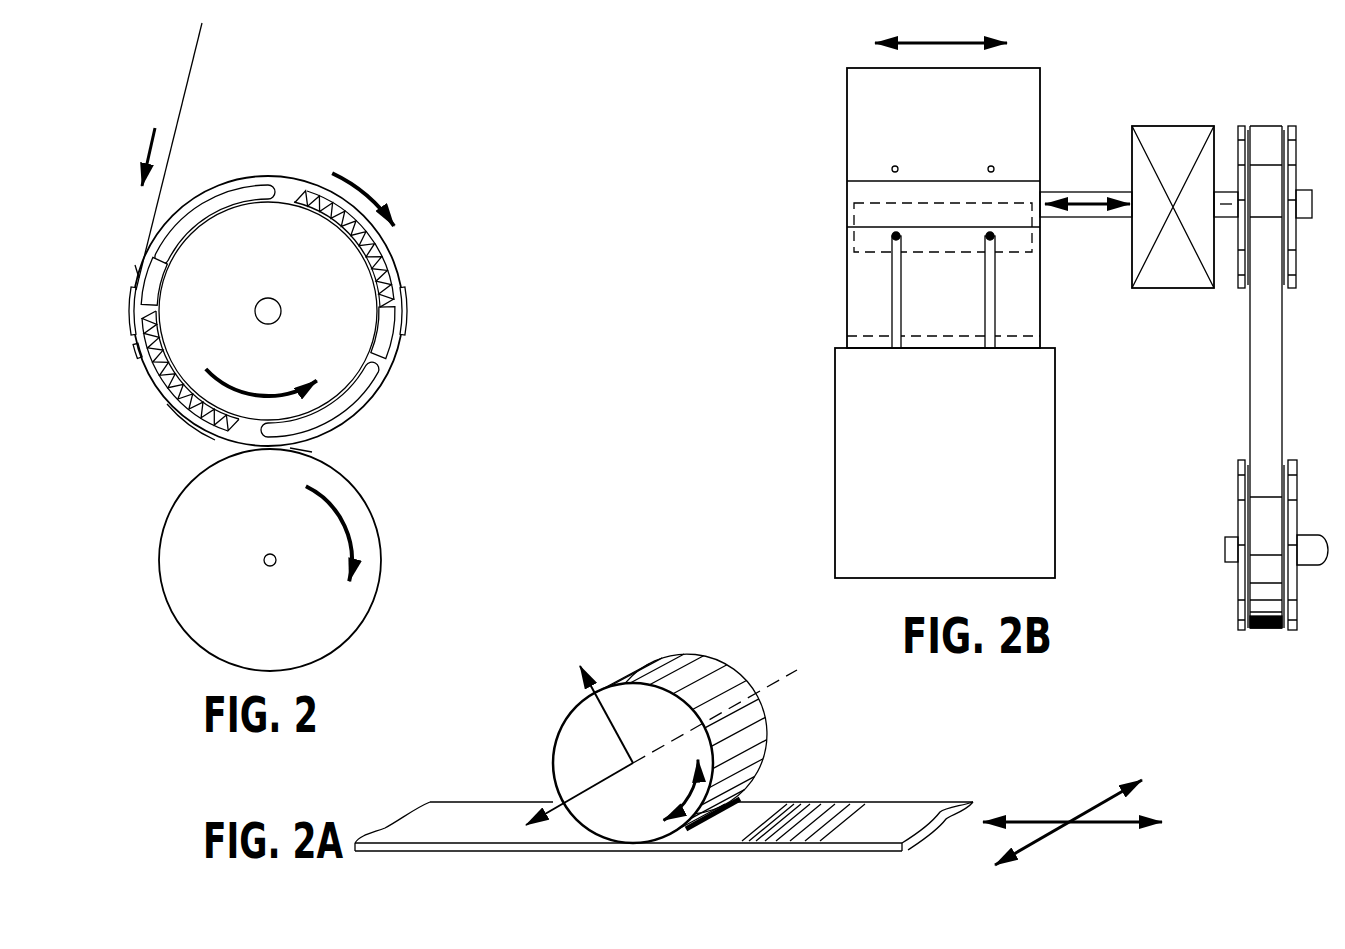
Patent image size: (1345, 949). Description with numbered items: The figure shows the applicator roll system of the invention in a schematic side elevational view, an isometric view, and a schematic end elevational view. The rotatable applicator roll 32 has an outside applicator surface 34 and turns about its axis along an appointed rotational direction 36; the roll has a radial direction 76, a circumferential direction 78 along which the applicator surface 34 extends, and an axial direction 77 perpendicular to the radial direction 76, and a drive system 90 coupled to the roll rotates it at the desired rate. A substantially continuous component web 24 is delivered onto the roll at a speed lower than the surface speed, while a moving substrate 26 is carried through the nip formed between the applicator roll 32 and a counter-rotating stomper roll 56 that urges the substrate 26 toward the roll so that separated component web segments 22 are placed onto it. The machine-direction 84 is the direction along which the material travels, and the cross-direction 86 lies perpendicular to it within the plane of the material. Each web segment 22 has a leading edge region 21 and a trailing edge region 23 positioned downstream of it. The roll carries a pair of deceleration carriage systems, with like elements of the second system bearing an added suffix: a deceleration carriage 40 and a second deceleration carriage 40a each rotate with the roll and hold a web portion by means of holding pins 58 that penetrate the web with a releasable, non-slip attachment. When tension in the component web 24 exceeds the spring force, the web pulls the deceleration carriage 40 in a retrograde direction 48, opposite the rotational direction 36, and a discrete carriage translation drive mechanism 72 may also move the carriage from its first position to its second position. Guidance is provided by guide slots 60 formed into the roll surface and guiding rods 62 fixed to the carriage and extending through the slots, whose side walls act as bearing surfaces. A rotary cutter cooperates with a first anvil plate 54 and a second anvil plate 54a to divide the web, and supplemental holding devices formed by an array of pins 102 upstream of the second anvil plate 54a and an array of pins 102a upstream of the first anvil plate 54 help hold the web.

In FIG. 2, the leading edge region 21 is at (305, 452).
In FIG. 2, the component web segments 22 is at (192, 428).
In FIG. 2, the trailing edge region 23 is at (133, 345).
In FIG. 2, the component web 24 is at (187, 80).
In FIG. 2A, the moving substrate 26 is at (425, 820).
In FIG. 2, the applicator roll 32 is at (251, 259).
In FIG. 2B, the applicator roll 32 is at (1042, 118).
In FIG. 2A, the applicator roll 32 is at (562, 728).
In FIG. 2, the applicator surface 34 is at (283, 176).
In FIG. 2B, the applicator surface 34 is at (875, 93).
In FIG. 2A, the applicator surface 34 is at (748, 753).
In FIG. 2, the rotational direction 36 is at (263, 395).
In FIG. 2, the deceleration carriage 40 is at (162, 287).
In FIG. 2B, the deceleration carriage 40 is at (862, 218).
In FIG. 2, the deceleration carriage 40a is at (373, 329).
In FIG. 2, the retrograde direction 48 is at (355, 183).
In FIG. 2, the anvil plate 54 is at (132, 315).
In FIG. 2B, the anvil plate 54 is at (858, 190).
In FIG. 2, the anvil plate 54a is at (405, 305).
In FIG. 2, the stomper roll 56 is at (377, 530).
In FIG. 2B, the stomper roll 56 is at (1057, 443).
In FIG. 2, the holding pins 58 is at (137, 273).
In FIG. 2B, the guide slots 60 is at (890, 308).
In FIG. 2B, the guiding rods 62 is at (989, 237).
In FIG. 2, the carriage translation drive mechanism 72 is at (114, 210).
In FIG. 2A, the radial direction 76 is at (617, 727).
In FIG. 2B, the axial direction 77 is at (1087, 200).
In FIG. 2A, the axial direction 77 is at (602, 780).
In FIG. 2A, the circumferential direction 78 is at (682, 795).
In FIG. 2A, the machine-direction 84 is at (1085, 825).
In FIG. 2B, the cross-direction 86 is at (938, 42).
In FIG. 2A, the cross-direction 86 is at (1093, 805).
In FIG. 2B, the drive system 90 is at (1283, 347).
In FIG. 2, the array of pins 102 is at (405, 272).
In FIG. 2, the array of pins 102a is at (137, 350).
In FIG. 2B, the array of pins 102a is at (991, 166).